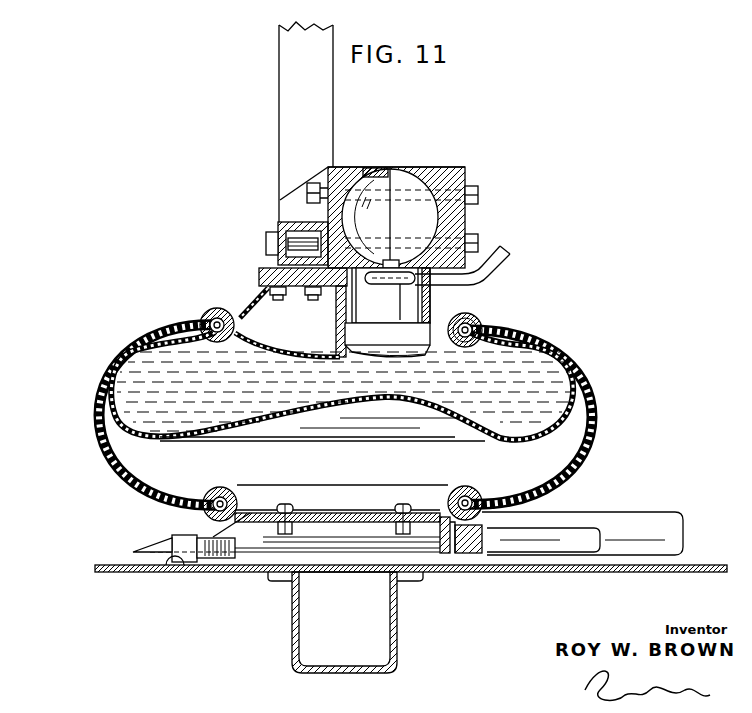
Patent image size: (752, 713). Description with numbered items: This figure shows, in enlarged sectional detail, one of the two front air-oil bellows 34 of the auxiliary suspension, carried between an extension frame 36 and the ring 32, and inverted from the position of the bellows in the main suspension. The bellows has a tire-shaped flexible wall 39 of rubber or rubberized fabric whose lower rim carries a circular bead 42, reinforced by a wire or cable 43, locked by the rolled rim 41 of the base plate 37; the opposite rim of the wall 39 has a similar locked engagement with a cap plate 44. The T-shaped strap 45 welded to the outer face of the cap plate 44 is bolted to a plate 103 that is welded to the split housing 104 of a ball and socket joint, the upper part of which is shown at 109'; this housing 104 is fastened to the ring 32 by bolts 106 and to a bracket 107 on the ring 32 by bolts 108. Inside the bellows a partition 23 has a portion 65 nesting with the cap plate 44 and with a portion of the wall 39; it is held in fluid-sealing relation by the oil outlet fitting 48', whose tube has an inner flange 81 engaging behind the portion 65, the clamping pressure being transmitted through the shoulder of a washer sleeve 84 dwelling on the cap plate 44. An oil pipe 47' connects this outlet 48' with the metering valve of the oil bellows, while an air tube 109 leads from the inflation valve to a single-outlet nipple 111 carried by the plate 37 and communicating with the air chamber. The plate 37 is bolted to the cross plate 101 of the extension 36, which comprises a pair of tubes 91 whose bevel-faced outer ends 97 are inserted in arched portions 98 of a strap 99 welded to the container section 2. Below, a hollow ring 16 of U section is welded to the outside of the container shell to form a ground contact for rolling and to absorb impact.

The container section 2 is at (606, 572).
The hollow ring 16 is at (396, 618).
The partition 23 is at (502, 438).
The ring 32 is at (322, 108).
The air-oil bellows 34 is at (600, 393).
The extension 36 is at (658, 500).
The base plate 37 is at (339, 496).
The flexible wall 39 is at (599, 426).
The rolled rim 41 is at (483, 327).
The circular bead 42 is at (482, 320).
The wire or cable 43 is at (488, 336).
The cap plate 44 is at (290, 346).
The T-shaped strap 45 is at (306, 300).
The oil pipe 47' is at (458, 265).
The fitting 48' is at (413, 312).
The portion of partition 65 is at (326, 366).
The inner flange 81 is at (347, 362).
The washer sleeve 84 is at (387, 346).
The tube 91 is at (668, 512).
The bevel face 97 is at (148, 543).
The arched portion 98 is at (183, 533).
The strap 99 is at (168, 568).
The cross plate 101 is at (364, 512).
The plate 103 is at (258, 277).
The split housing 104 is at (468, 223).
The bolt 106 is at (478, 247).
The bracket 107 is at (297, 203).
The bolt 108 is at (478, 193).
The air tube 109 is at (554, 521).
The housing cap 109' is at (409, 162).
The single-outlet nipple 111 is at (438, 530).